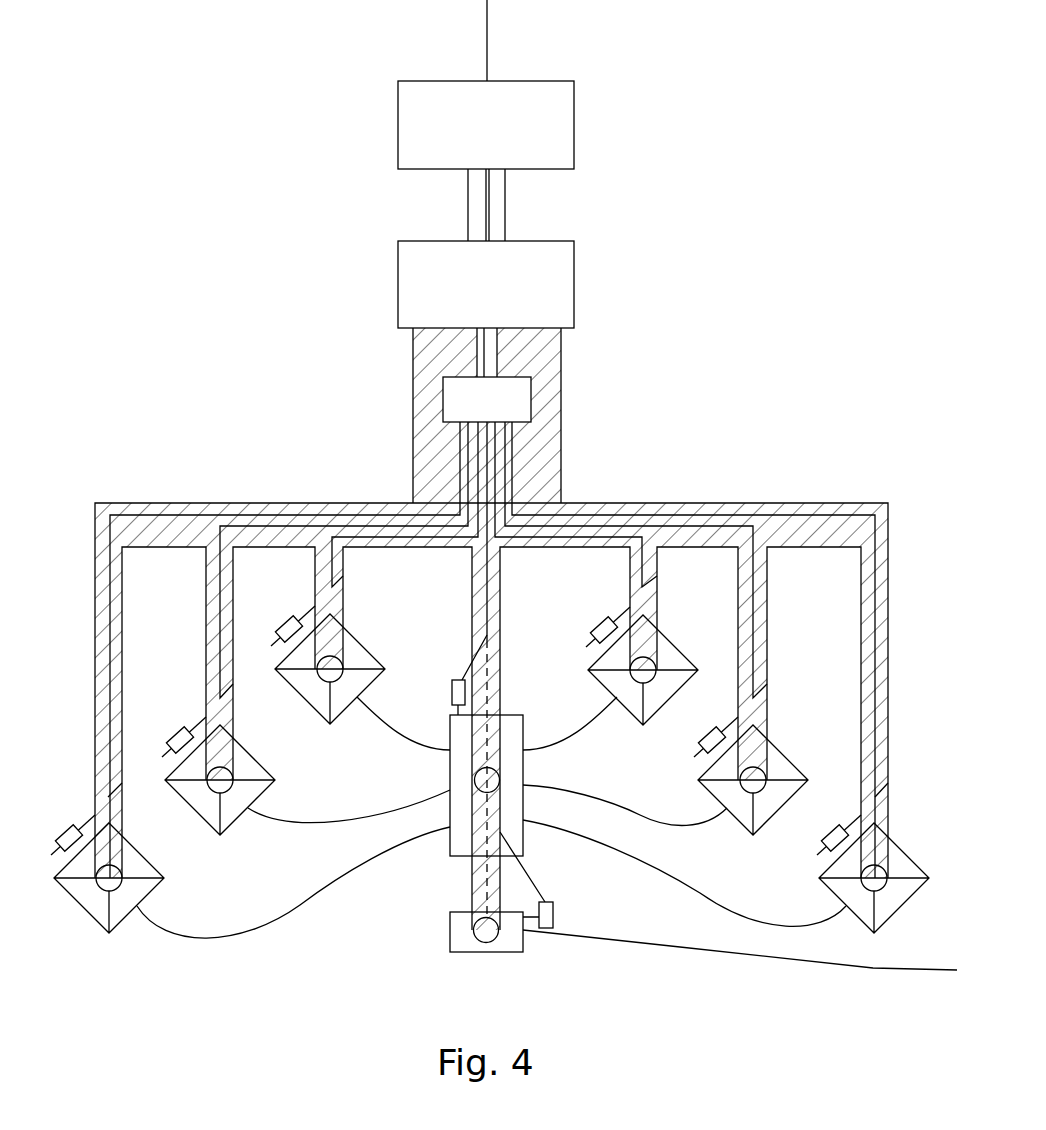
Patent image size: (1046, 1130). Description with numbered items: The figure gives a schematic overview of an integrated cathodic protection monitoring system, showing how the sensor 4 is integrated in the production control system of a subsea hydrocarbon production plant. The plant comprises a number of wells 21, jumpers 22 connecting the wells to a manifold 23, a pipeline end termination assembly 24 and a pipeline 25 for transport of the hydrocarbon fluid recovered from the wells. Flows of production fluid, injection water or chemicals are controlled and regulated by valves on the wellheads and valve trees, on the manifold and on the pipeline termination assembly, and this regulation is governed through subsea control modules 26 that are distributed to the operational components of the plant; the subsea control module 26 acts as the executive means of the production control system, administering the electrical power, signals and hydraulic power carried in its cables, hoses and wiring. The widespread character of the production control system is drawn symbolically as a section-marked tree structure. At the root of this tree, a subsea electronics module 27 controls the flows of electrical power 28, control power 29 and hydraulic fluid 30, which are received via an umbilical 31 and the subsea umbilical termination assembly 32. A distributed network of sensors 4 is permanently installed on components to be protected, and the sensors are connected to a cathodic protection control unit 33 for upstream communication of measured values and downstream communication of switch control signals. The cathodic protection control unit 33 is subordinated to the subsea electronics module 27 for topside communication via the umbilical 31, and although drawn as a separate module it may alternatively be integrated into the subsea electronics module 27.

The sensor 4 is at (65, 824).
The well 21 is at (243, 819).
The jumper 22 is at (220, 937).
The manifold 23 is at (450, 840).
The pipeline end termination assembly 24 is at (450, 935).
The pipeline 25 is at (698, 955).
The subsea control module 26 is at (225, 777).
The subsea electronics module 27 is at (574, 271).
The electrical power 28 is at (467, 207).
The control power 29 is at (489, 205).
The hydraulic fluid 30 is at (505, 225).
The umbilical 31 is at (487, 40).
The subsea umbilical termination assembly 32 is at (574, 119).
The cathodic protection control unit 33 is at (531, 393).